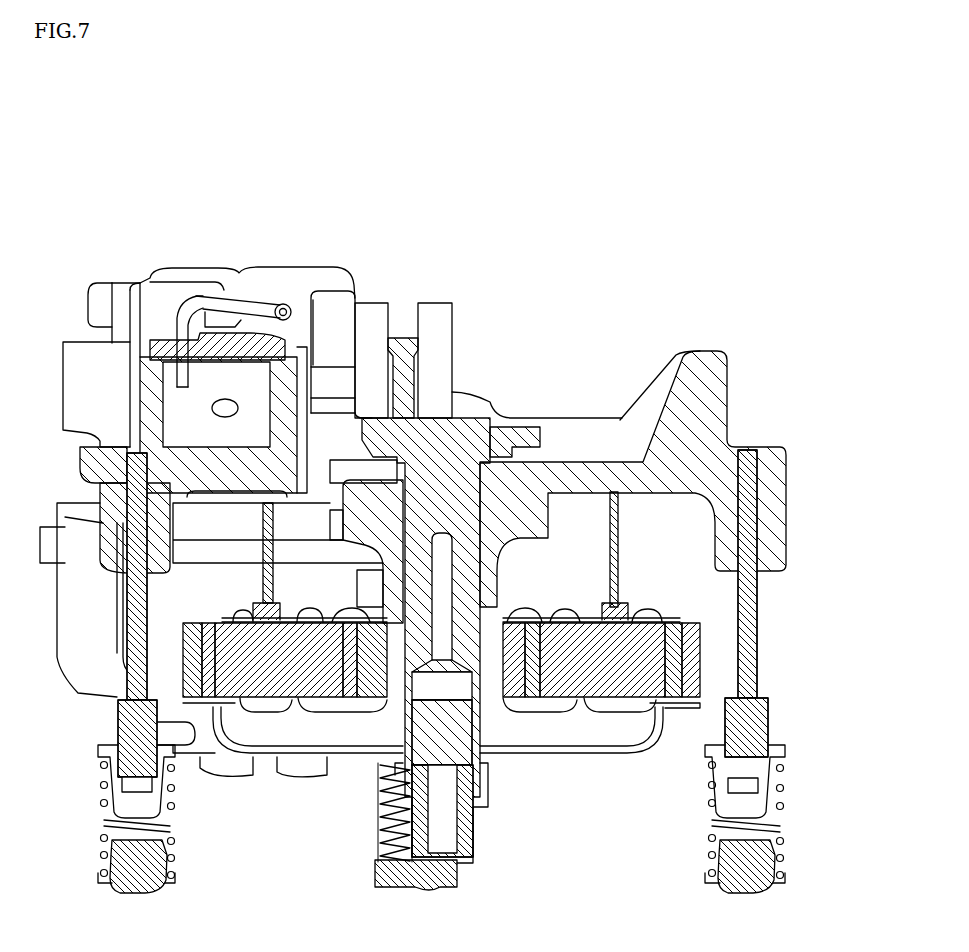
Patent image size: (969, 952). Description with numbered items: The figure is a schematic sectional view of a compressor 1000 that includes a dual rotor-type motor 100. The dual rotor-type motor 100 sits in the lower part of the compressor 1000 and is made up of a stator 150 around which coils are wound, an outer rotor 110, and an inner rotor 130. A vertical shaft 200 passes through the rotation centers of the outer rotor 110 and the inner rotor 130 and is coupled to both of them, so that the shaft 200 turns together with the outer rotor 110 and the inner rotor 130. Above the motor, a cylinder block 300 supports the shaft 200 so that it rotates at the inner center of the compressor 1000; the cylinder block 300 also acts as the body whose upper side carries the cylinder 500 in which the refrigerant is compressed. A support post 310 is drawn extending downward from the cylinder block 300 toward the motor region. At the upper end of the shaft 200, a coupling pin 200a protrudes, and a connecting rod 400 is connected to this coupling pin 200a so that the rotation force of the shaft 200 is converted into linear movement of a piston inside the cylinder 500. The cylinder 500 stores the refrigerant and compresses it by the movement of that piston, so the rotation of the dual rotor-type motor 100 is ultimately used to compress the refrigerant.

The compressor 1000 is at (190, 98).
The cylinder 500 is at (163, 303).
The connecting rod 400 is at (357, 385).
The coupling pin 200a is at (418, 345).
The shaft 200 is at (468, 522).
The cylinder block 300 is at (588, 478).
The support post 310 is at (620, 547).
The dual rotor-type motor 100 is at (385, 862).
The outer rotor 110 is at (215, 700).
The stator 150 is at (285, 675).
The inner rotor 130 is at (358, 675).